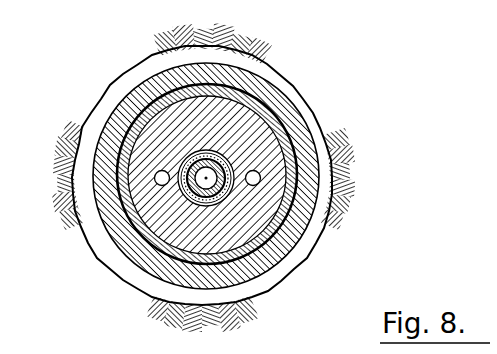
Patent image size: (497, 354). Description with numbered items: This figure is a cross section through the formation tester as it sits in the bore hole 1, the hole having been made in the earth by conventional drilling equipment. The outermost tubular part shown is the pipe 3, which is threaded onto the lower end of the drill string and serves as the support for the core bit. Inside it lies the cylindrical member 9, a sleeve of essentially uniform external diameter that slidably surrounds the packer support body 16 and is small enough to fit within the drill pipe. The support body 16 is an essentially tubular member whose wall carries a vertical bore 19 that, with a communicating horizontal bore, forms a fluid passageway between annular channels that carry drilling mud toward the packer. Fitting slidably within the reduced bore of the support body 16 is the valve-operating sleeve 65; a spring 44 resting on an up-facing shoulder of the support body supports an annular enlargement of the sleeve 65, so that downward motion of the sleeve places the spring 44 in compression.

The bore hole 1 is at (306, 88).
The pipe 3 is at (301, 131).
The cylindrical member 9 is at (292, 189).
The packer support body 16 is at (250, 205).
The vertical bore 19 is at (153, 177).
The spring 44 is at (188, 190).
The valve-operating sleeve 65 is at (221, 192).